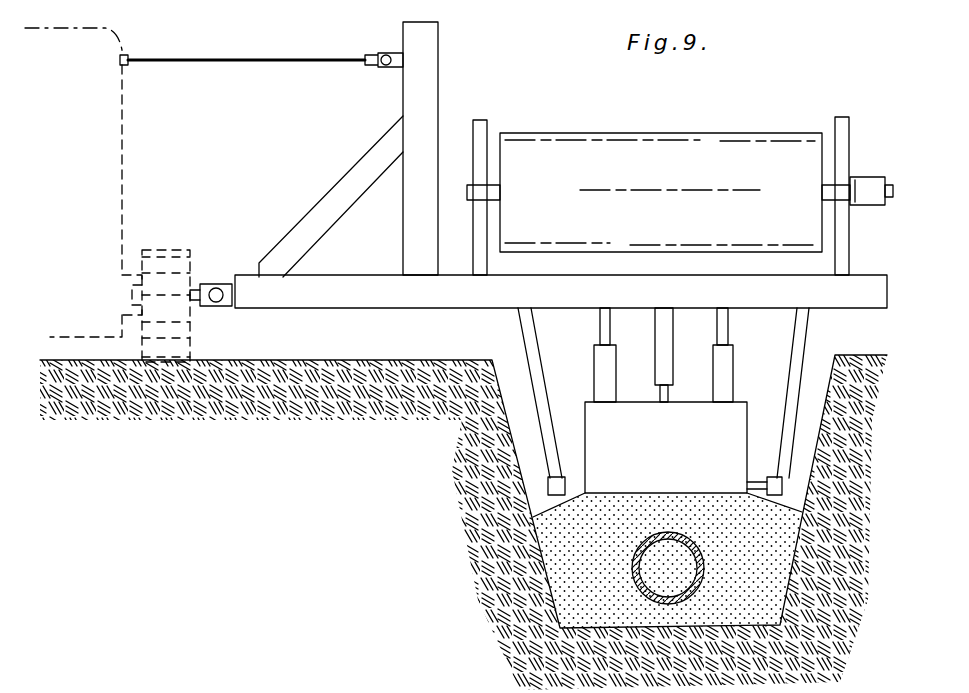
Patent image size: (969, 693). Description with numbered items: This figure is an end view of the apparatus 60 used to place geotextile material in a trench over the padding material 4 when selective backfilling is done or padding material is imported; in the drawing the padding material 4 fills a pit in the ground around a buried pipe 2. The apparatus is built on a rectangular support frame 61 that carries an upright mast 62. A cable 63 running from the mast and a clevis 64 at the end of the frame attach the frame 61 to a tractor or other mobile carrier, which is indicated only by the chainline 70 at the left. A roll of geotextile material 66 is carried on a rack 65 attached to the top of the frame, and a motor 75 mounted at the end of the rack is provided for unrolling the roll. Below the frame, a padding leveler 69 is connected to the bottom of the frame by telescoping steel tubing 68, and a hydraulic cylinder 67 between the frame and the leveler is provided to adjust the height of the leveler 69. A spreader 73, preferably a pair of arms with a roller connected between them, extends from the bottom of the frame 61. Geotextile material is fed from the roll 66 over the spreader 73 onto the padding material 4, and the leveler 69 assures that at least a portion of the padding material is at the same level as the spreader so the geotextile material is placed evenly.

The pipe 2 is at (680, 580).
The padding material 4 is at (578, 545).
The apparatus 60 is at (362, 124).
The rectangular support frame 61 is at (778, 302).
The mast 62 is at (430, 72).
The cable 63 is at (275, 60).
The clevis 64 is at (212, 283).
The rack 65 is at (836, 118).
The roll of geotextile material 66 is at (623, 148).
The hydraulic cylinder 67 is at (668, 332).
The telescoping steel tubing 68 is at (732, 368).
The padding leveler 69 is at (680, 454).
The chainline 70 is at (122, 122).
The spreader 73 is at (795, 378).
The motor 75 is at (880, 185).